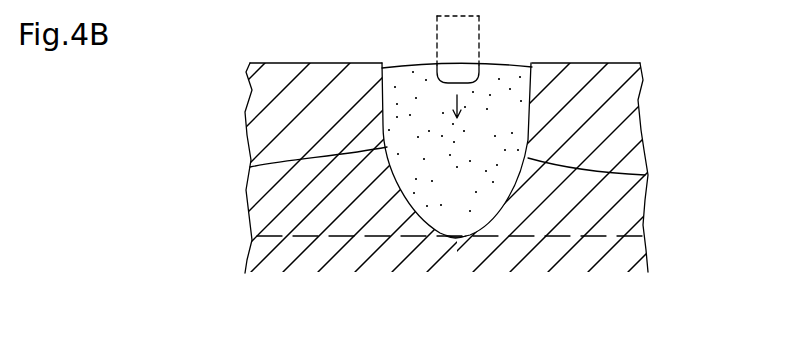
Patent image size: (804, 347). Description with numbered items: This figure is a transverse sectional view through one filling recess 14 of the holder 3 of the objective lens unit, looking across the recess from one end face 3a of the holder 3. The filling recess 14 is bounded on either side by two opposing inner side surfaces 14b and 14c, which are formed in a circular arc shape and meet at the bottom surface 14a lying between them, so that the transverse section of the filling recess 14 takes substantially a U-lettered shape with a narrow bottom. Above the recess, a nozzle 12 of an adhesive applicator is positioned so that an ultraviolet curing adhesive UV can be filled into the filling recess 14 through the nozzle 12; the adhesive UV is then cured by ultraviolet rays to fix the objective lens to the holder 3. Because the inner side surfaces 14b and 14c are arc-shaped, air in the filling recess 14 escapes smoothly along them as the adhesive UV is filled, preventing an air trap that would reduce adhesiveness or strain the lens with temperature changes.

The holder 3 is at (615, 107).
The end face of holder 3a is at (338, 63).
The nozzle 12 is at (462, 24).
The filling recess 14 is at (421, 55).
The bottom surface of filling recess 14a is at (460, 237).
The inner side surface of filling recess 14b is at (252, 167).
The inner side surface of filling recess 14c is at (645, 175).
The ultraviolet curing adhesive UV is at (498, 93).